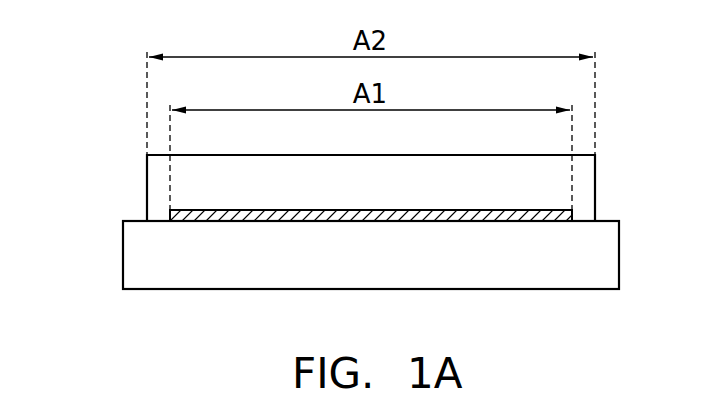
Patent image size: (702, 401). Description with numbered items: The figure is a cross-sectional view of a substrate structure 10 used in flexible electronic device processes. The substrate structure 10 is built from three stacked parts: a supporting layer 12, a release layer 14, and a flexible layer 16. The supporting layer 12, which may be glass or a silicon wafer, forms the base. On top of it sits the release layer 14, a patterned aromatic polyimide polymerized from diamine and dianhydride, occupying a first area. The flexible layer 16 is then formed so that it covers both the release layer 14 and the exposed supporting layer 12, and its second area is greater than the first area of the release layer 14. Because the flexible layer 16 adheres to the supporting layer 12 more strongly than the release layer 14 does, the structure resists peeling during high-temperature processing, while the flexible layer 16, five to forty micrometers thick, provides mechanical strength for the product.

The substrate structure 10 is at (405, 242).
The supporting layer 12 is at (607, 253).
The release layer 14 is at (573, 213).
The flexible layer 16 is at (583, 165).